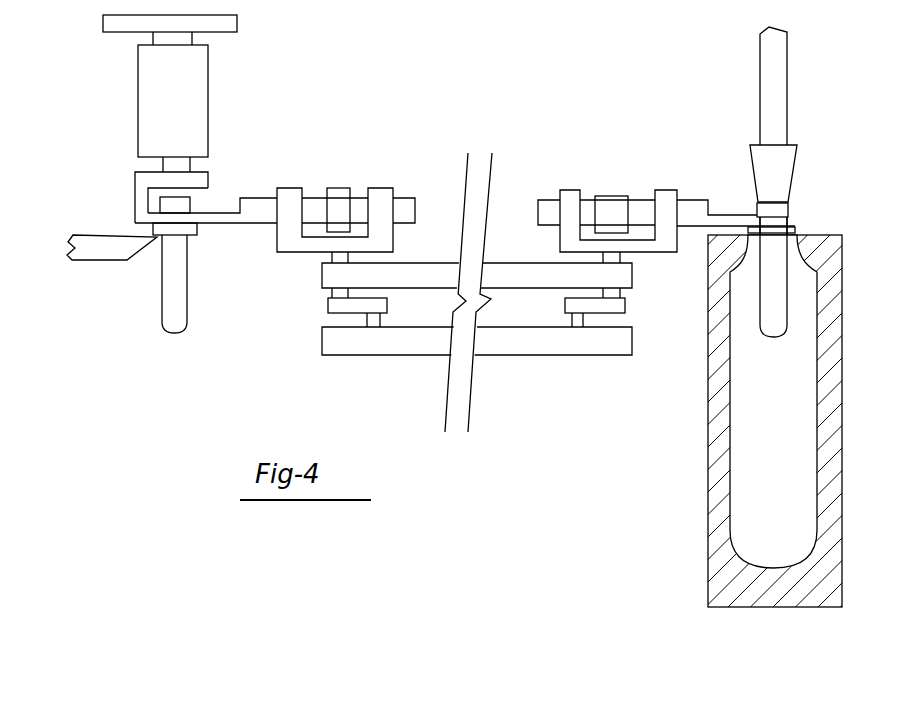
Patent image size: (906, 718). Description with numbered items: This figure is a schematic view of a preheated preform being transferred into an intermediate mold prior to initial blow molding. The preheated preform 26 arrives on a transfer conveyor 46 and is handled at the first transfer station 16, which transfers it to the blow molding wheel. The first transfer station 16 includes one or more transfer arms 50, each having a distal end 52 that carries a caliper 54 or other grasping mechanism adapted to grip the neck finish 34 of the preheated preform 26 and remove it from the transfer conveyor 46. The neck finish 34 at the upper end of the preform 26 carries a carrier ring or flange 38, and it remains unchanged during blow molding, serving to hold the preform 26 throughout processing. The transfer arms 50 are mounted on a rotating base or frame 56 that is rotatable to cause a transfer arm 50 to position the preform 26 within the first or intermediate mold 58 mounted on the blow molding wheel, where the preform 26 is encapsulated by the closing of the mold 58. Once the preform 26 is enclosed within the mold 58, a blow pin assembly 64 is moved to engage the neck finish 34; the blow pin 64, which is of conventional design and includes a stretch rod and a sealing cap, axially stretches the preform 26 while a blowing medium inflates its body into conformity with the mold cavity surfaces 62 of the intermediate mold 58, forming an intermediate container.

The first transfer station 16 is at (443, 151).
The preform 26 is at (175, 285).
The neck finish 34 is at (192, 205).
The carrier ring or flange 38 is at (157, 232).
The transfer conveyor 46 is at (195, 81).
The transfer arm 50 is at (341, 195).
The distal end 52 is at (213, 218).
The caliper 54 is at (173, 218).
The rotating base or frame 56 is at (392, 342).
The intermediate mold 58 is at (718, 472).
The mold cavity surfaces 62 is at (761, 418).
The blow pin assembly 64 is at (778, 114).